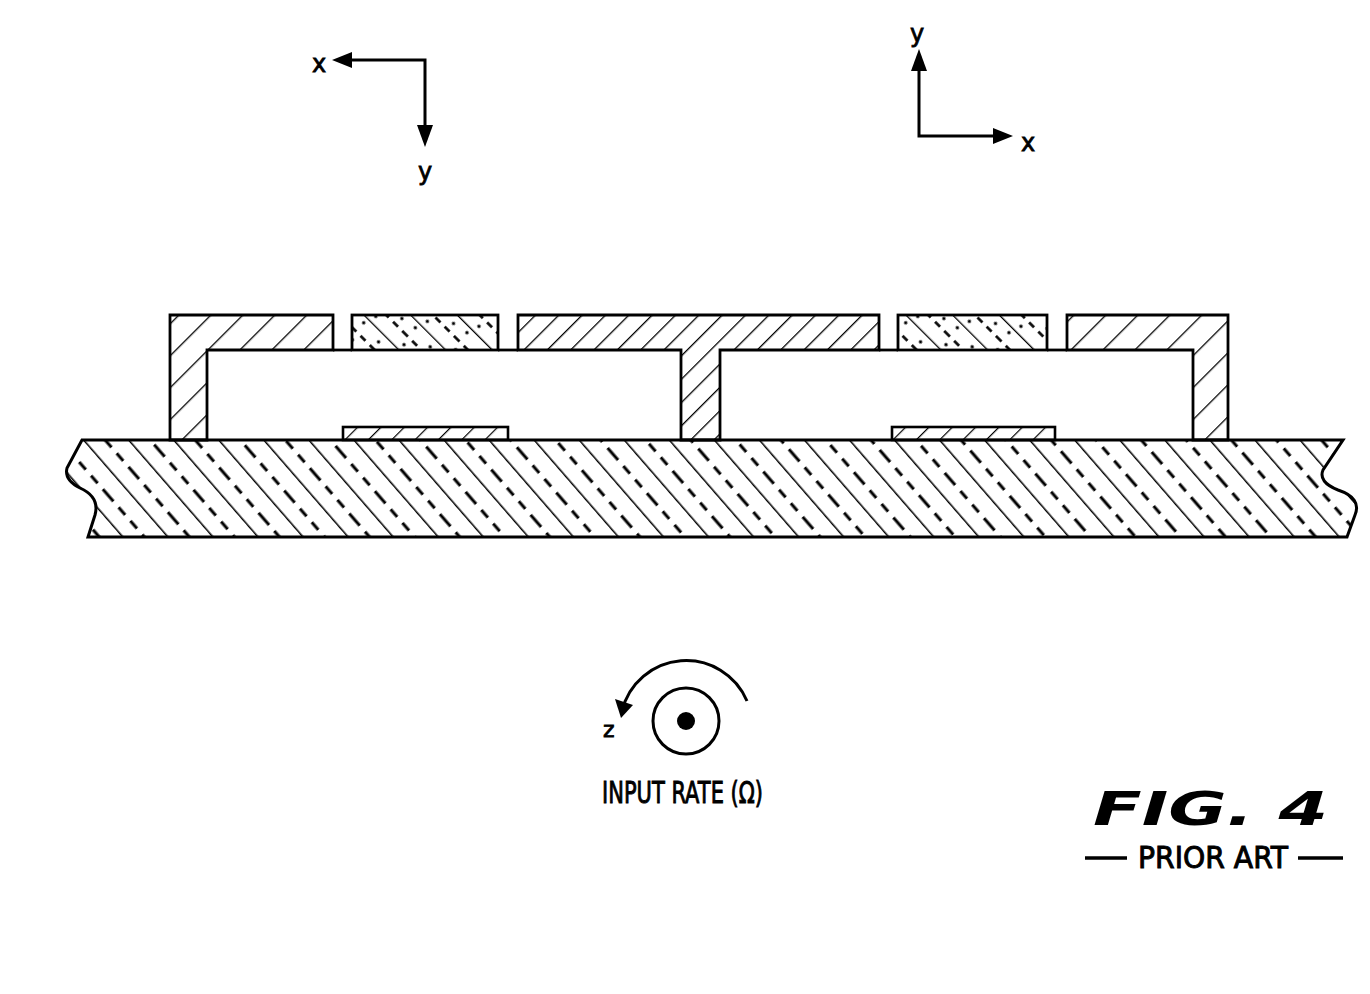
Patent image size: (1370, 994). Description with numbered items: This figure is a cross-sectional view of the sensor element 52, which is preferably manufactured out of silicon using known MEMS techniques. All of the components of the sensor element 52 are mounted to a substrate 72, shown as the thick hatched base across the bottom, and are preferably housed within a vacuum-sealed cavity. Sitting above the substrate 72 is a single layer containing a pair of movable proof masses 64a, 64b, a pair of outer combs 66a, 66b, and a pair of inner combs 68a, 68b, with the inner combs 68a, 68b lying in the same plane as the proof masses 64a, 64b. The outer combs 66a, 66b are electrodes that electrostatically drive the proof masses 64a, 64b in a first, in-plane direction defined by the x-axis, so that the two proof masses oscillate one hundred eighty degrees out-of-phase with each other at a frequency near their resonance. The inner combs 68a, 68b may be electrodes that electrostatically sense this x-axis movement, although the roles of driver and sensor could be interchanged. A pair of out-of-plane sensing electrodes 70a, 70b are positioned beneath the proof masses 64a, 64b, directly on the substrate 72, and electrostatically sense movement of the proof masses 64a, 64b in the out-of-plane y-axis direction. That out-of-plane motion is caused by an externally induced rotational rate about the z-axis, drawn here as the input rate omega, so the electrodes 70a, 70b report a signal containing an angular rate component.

The sensor element 52 is at (1215, 186).
The movable proof mass 64a is at (420, 314).
The movable proof mass 64b is at (971, 314).
The outer comb 66a is at (264, 314).
The outer comb 66b is at (1129, 314).
The inner comb 68a is at (560, 314).
The inner comb 68b is at (829, 314).
The out-of-plane sensing electrode 70a is at (358, 426).
The out-of-plane sensing electrode 70b is at (1041, 426).
The substrate 72 is at (1148, 528).